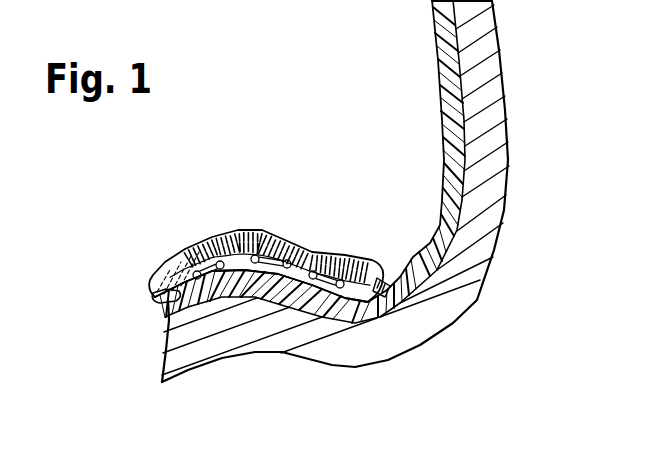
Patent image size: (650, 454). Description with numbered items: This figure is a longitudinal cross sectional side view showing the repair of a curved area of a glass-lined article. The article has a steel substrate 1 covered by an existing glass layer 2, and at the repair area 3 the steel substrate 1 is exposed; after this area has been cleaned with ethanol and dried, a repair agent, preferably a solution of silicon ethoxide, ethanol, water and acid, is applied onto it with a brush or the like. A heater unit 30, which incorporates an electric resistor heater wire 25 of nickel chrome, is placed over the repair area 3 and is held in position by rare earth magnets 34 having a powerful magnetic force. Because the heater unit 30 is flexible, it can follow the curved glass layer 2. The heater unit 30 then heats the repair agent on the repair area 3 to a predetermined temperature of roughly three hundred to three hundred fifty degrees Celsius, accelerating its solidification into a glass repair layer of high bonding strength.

The steel substrate 1 is at (497, 88).
The glass layer 2 is at (447, 127).
The repair area 3 is at (286, 247).
The heater wire 25 is at (192, 245).
The heater unit 30 is at (220, 233).
The rare earth magnets 34 is at (158, 297).